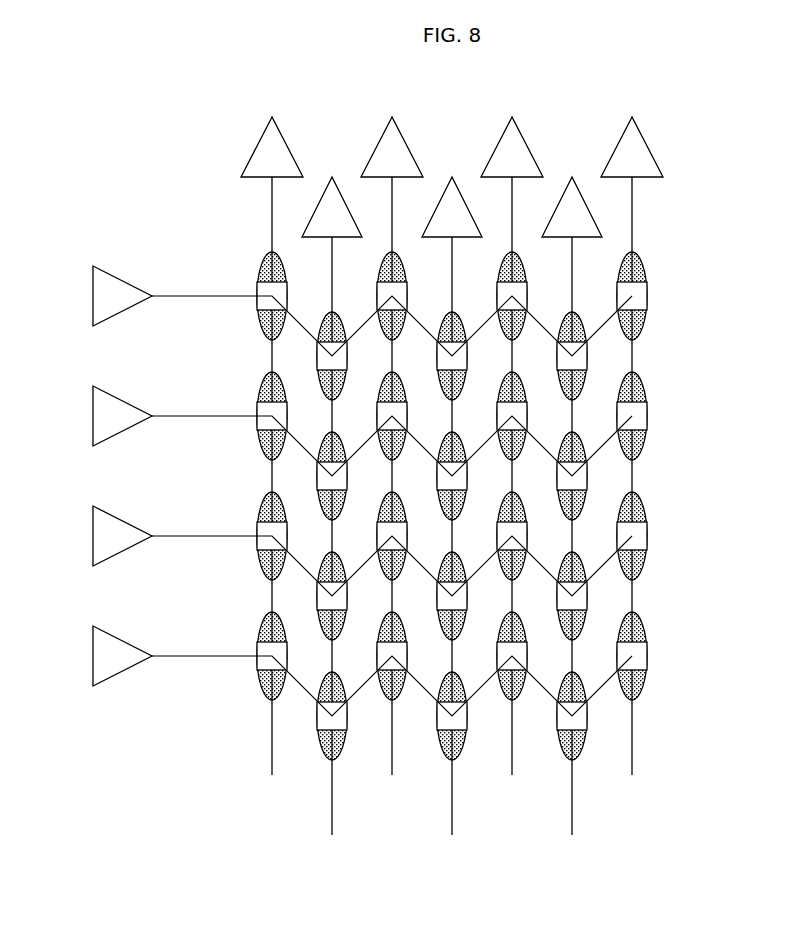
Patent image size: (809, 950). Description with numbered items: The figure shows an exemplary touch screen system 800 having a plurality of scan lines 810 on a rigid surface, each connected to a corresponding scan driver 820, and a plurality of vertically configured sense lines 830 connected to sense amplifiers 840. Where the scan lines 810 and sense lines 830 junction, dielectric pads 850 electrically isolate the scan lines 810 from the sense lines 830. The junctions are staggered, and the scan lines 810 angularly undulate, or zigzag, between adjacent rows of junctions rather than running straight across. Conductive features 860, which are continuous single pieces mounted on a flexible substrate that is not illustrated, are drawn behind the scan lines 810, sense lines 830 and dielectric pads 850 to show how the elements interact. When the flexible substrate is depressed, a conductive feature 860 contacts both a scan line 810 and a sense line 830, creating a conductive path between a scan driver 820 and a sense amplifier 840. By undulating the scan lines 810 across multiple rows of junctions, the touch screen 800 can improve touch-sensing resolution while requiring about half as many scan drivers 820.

The touch screen system 800 is at (125, 110).
The scan lines 810 is at (185, 416).
The scan drivers 820 is at (113, 674).
The sense lines 830 is at (632, 241).
The sense amplifiers 840 is at (287, 142).
The dielectric pads 850 is at (647, 428).
The conductive features 860 is at (634, 613).